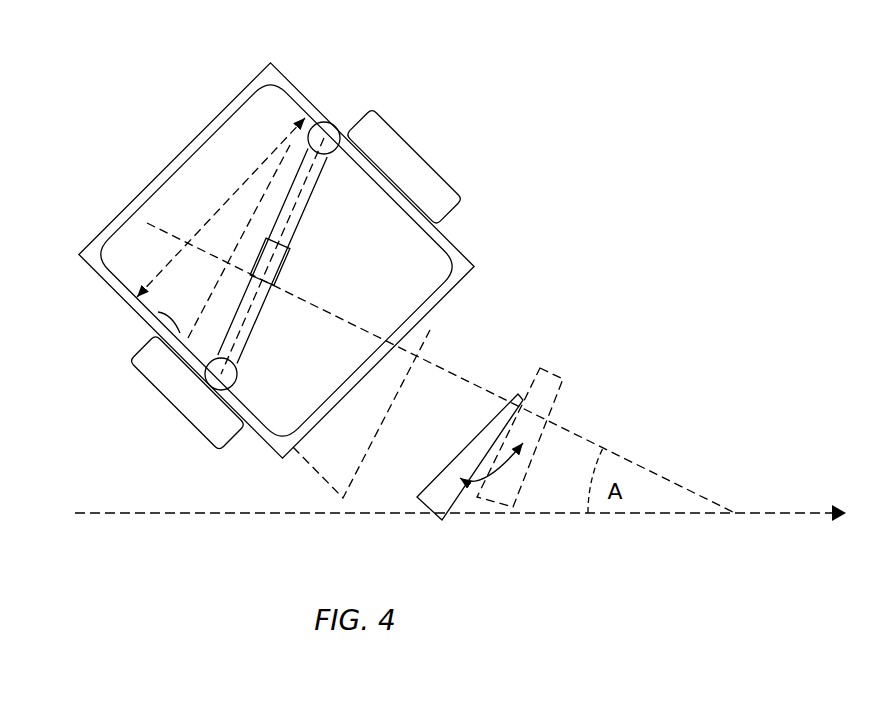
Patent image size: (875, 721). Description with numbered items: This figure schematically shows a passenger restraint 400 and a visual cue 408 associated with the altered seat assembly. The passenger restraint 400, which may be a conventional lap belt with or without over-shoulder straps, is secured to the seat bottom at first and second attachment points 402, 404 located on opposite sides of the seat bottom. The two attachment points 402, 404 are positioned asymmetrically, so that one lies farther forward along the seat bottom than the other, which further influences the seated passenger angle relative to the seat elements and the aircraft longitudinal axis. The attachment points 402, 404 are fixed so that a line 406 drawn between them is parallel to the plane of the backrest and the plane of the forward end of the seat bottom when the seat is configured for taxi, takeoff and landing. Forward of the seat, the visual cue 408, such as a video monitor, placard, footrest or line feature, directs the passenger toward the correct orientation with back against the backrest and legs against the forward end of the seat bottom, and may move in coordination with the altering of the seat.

The passenger restraint 400 is at (313, 192).
The first attachment point 402 is at (325, 140).
The second attachment point 404 is at (218, 373).
The line 406 is at (292, 217).
The visual cue 408 is at (447, 488).